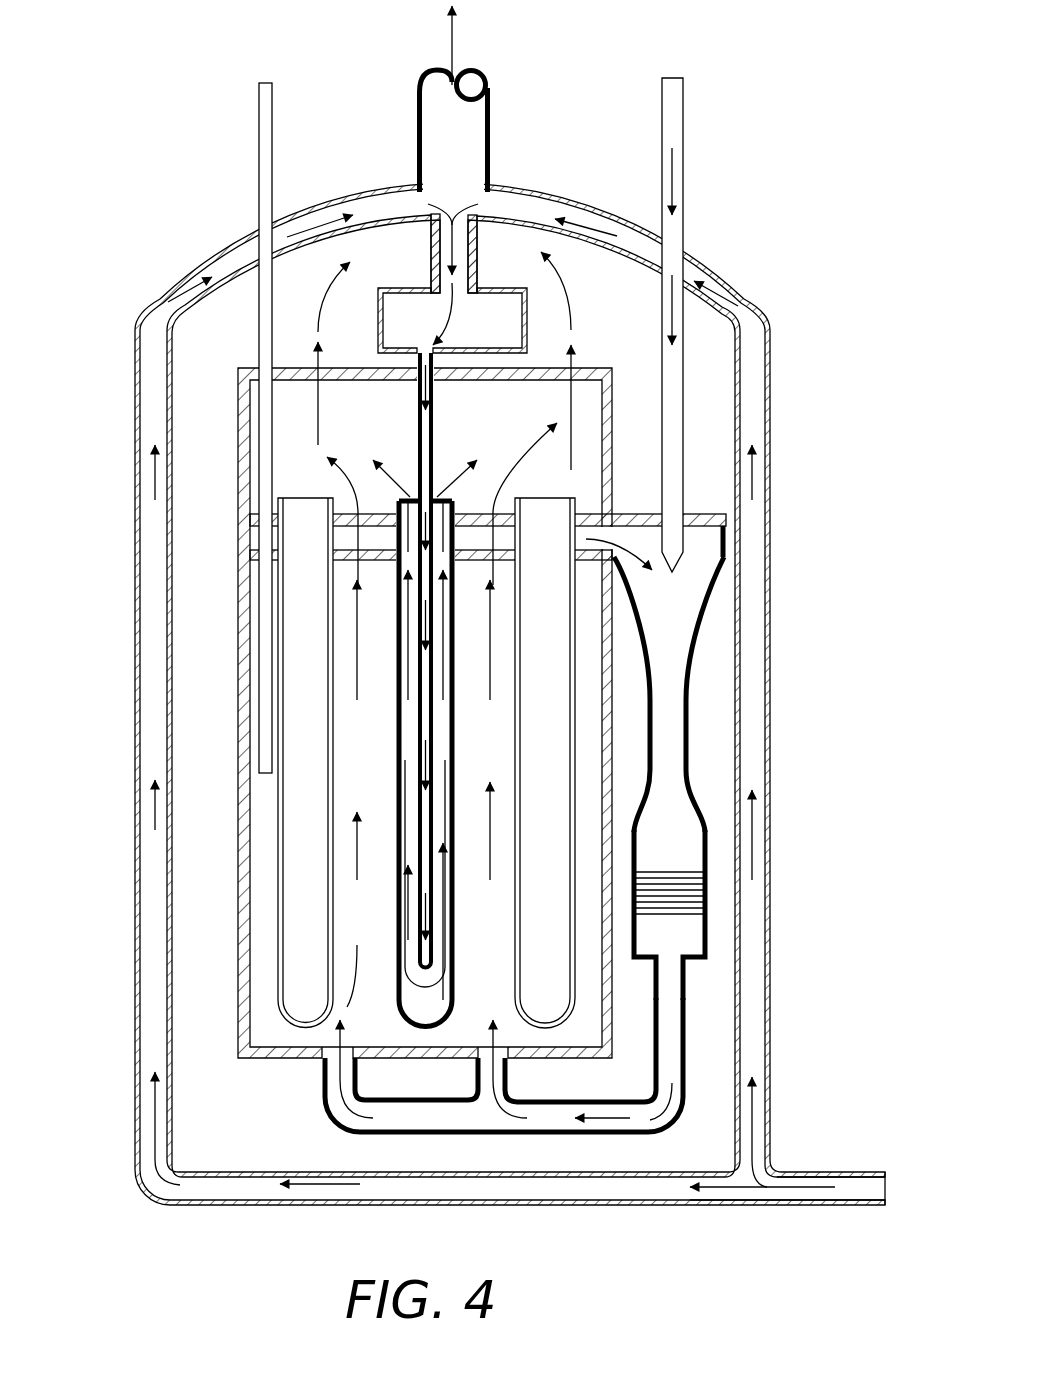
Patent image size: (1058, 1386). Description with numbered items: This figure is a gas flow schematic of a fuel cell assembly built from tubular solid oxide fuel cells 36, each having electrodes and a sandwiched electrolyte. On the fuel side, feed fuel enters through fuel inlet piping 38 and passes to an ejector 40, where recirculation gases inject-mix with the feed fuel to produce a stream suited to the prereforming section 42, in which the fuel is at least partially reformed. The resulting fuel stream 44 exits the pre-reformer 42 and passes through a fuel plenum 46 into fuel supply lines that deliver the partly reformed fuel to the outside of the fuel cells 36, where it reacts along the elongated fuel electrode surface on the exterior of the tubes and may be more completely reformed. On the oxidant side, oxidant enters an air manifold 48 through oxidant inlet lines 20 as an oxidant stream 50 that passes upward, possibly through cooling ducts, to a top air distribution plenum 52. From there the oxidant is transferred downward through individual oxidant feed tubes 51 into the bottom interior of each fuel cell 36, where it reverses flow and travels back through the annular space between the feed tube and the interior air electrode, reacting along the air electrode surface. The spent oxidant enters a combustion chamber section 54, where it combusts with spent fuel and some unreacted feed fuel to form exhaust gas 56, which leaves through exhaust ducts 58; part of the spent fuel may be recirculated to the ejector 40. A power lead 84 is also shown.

The oxidant inlet line 20 is at (890, 1187).
The fuel cell 36 is at (397, 812).
The fuel inlet piping 38 is at (683, 137).
The ejector 40 is at (668, 572).
The prereforming section 42 is at (706, 898).
The fuel stream 44 is at (667, 1120).
The fuel plenum 46 is at (340, 1127).
The air manifold 48 is at (860, 1207).
The oxidant stream 50 is at (153, 1131).
The oxidant feed tube 51 is at (437, 450).
The top air distribution plenum 52 is at (418, 288).
The combustion chamber section 54 is at (362, 407).
The exhaust gas 56 is at (455, 35).
The exhaust duct 58 is at (417, 113).
The power lead 84 is at (259, 121).